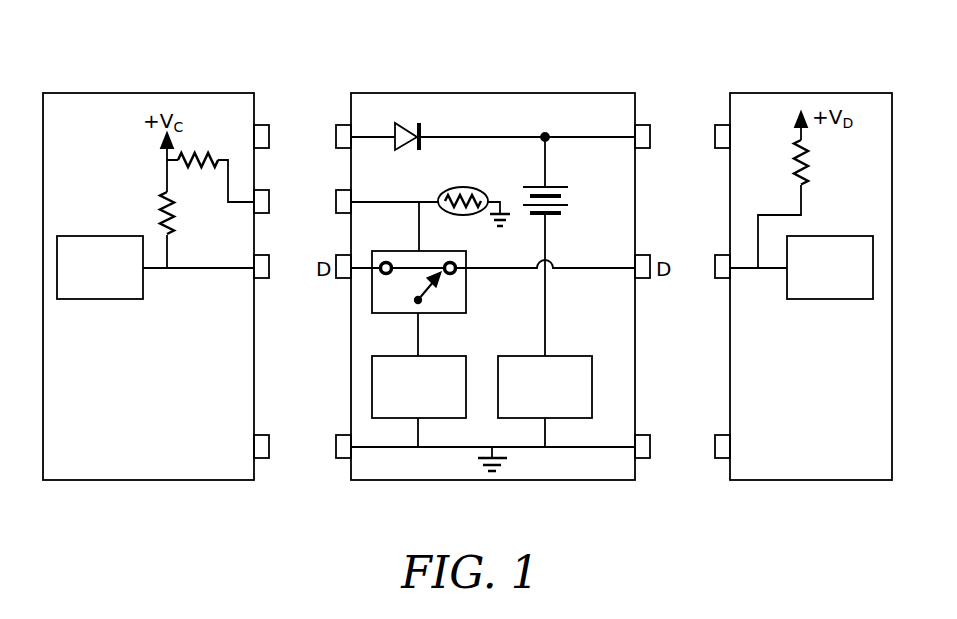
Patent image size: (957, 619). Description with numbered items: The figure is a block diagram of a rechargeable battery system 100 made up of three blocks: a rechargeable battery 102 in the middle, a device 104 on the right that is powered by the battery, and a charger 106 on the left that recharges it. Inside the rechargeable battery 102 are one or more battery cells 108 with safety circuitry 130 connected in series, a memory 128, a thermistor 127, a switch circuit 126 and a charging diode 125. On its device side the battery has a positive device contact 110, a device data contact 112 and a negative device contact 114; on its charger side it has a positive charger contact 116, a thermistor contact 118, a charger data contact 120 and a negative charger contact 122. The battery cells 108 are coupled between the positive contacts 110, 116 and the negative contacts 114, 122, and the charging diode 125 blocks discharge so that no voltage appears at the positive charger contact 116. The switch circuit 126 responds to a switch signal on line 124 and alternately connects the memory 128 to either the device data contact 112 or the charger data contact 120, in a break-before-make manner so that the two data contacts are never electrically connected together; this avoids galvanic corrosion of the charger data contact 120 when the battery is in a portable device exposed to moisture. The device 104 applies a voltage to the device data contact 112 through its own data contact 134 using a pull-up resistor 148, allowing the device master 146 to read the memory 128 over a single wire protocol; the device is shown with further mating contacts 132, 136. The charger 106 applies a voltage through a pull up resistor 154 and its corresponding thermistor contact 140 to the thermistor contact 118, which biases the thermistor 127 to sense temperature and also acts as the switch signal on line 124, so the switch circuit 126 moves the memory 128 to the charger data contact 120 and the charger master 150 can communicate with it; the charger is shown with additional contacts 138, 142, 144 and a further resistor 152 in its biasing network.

The rechargeable battery system 100 is at (782, 534).
The rechargeable battery 102 is at (493, 93).
The device 104 is at (812, 93).
The charger 106 is at (148, 93).
The battery cells 108 is at (558, 187).
The positive device contact 110 is at (643, 148).
The device data contact 112 is at (643, 278).
The negative device contact 114 is at (643, 458).
The positive charger contact 116 is at (336, 137).
The thermistor contact 118 is at (336, 202).
The charger data contact 120 is at (336, 268).
The negative charger contact 122 is at (336, 447).
The line 124 is at (392, 202).
The charging diode 125 is at (420, 123).
The switch circuit 126 is at (440, 251).
The thermistor 127 is at (468, 188).
The memory 128 is at (445, 356).
The safety circuitry 130 is at (573, 356).
The pin 132 is at (715, 137).
The data contact 134 is at (715, 268).
The ground pin 136 is at (715, 447).
The pin 138 is at (270, 137).
The thermistor contact 140 is at (270, 202).
The data pin 142 is at (262, 278).
The ground pin 144 is at (262, 458).
The device master 146 is at (830, 299).
The pull-up resistor 148 is at (810, 160).
The charger master 150 is at (100, 236).
The resistor 152 is at (176, 222).
The pull up resistor 154 is at (203, 156).